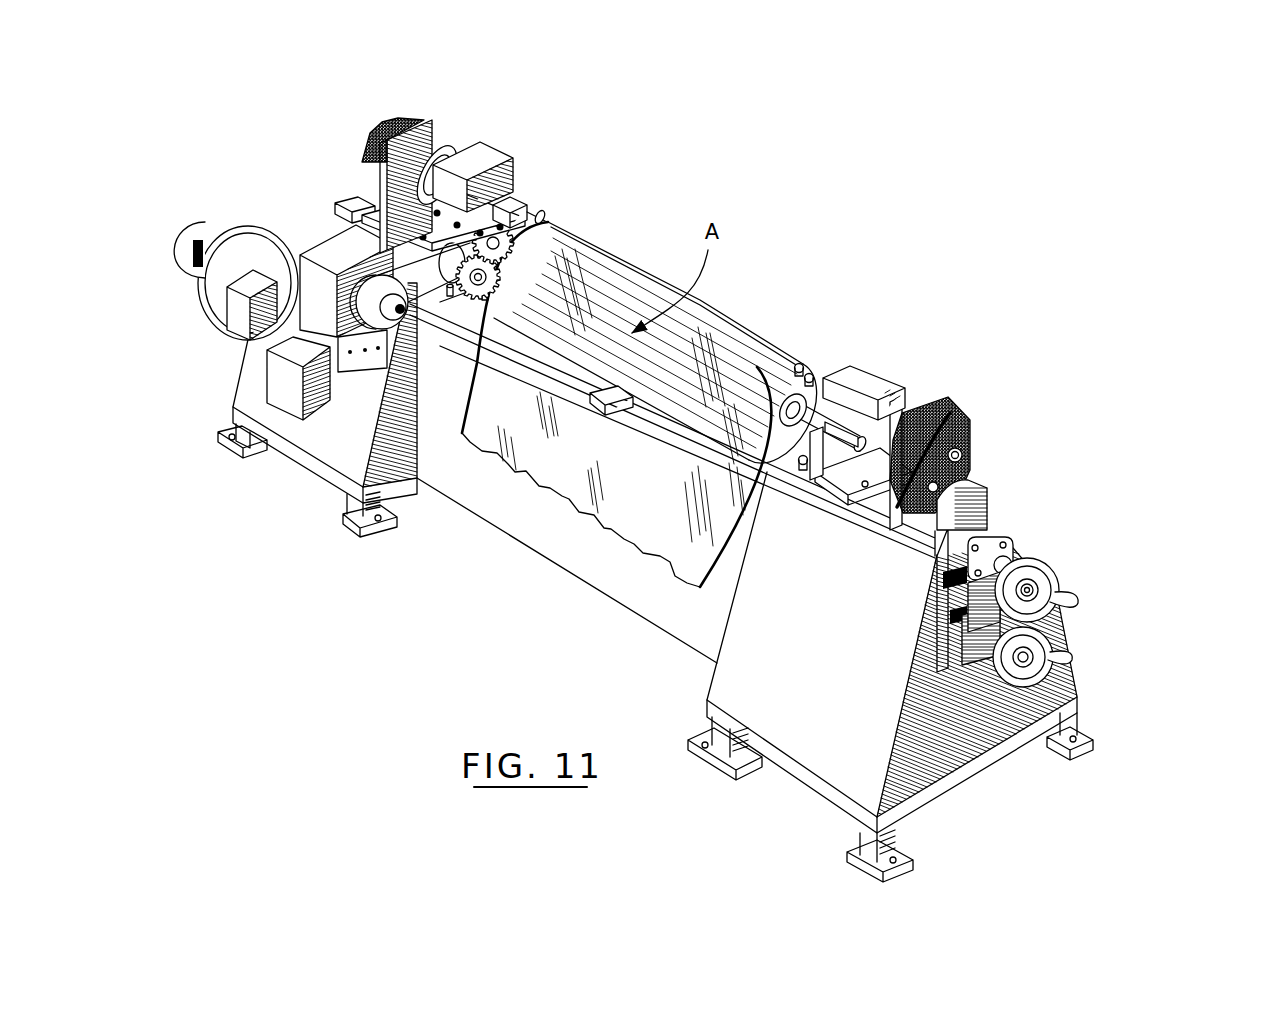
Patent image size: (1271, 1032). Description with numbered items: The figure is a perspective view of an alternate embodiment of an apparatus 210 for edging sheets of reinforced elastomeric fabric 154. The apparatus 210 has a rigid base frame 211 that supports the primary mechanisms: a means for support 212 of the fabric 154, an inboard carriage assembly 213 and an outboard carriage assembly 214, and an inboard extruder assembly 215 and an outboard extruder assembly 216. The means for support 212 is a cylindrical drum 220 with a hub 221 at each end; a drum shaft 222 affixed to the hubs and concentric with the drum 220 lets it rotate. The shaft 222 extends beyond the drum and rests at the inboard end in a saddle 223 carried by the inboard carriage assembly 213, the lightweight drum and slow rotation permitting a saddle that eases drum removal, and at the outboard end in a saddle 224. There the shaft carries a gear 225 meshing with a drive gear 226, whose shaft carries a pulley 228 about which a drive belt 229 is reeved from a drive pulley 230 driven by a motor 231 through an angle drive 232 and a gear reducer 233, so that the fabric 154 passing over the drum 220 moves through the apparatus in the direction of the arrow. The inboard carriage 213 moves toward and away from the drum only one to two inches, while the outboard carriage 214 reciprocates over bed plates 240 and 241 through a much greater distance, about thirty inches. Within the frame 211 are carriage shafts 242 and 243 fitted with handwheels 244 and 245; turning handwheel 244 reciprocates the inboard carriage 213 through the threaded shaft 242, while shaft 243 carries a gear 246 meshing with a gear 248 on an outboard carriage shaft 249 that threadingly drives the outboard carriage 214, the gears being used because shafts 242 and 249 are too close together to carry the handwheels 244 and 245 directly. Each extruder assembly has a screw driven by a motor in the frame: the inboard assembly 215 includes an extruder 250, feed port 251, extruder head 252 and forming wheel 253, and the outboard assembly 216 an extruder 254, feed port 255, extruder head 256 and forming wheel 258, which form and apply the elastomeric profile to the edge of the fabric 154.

The reinforced elastomeric fabric 154 is at (665, 537).
The apparatus 210 is at (298, 646).
The rigid base frame 211 is at (203, 436).
The means for support 212 is at (882, 275).
The inboard carriage assembly 213 is at (892, 567).
The outboard carriage assembly 214 is at (308, 198).
The inboard extruder assembly 215 is at (1014, 393).
The outboard extruder assembly 216 is at (537, 136).
The cylindrical drum 220 is at (706, 322).
The hub 221 is at (776, 440).
The drum shaft 222 is at (838, 440).
The saddle 223 is at (813, 445).
The saddle 224 is at (480, 330).
The gear 225 is at (497, 240).
The drive gear 226 is at (490, 280).
The pulley 228 is at (478, 262).
The drive belt 229 is at (445, 318).
The drive pulley 230 is at (390, 330).
The motor 231 is at (208, 274).
The angle drive 232 is at (345, 380).
The gear reducer 233 is at (333, 257).
The bed plate 240 is at (593, 393).
The bed plate 241 is at (347, 200).
The carriage shaft 242 is at (1032, 591).
The carriage shaft 243 is at (1028, 658).
The handwheel 244 is at (1034, 586).
The handwheel 245 is at (1036, 626).
The gear 246 is at (980, 652).
The gear 248 is at (970, 613).
The outboard carriage shaft 249 is at (970, 638).
The extruder 250 is at (862, 384).
The feed port 251 is at (913, 405).
The extruder head 252 is at (810, 374).
The forming wheel 253 is at (801, 367).
The extruder 254 is at (471, 177).
The feed port 255 is at (442, 160).
The extruder head 256 is at (522, 206).
The forming wheel 258 is at (540, 216).